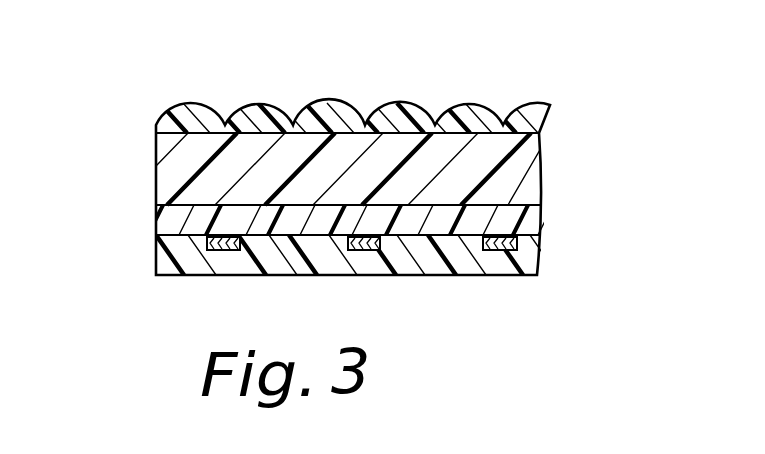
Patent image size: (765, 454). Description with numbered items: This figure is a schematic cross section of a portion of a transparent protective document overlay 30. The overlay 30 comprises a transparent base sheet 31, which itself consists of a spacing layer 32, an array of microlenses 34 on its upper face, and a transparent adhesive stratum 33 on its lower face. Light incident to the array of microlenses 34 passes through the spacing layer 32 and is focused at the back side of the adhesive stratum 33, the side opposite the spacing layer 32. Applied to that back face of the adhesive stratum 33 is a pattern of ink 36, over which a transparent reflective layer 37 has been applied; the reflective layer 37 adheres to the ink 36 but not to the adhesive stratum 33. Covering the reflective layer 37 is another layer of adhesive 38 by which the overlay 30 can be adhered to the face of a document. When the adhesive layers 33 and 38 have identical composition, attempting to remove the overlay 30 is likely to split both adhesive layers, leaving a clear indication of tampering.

The overlay 30 is at (524, 71).
The transparent base sheet 31 is at (76, 170).
The spacing layer 32 is at (523, 167).
The transparent adhesive stratum 33 is at (525, 221).
The array of microlenses 34 is at (203, 112).
The pattern of ink 36 is at (228, 237).
The transparent reflective layer 37 is at (367, 250).
The layer of adhesive 38 is at (178, 251).